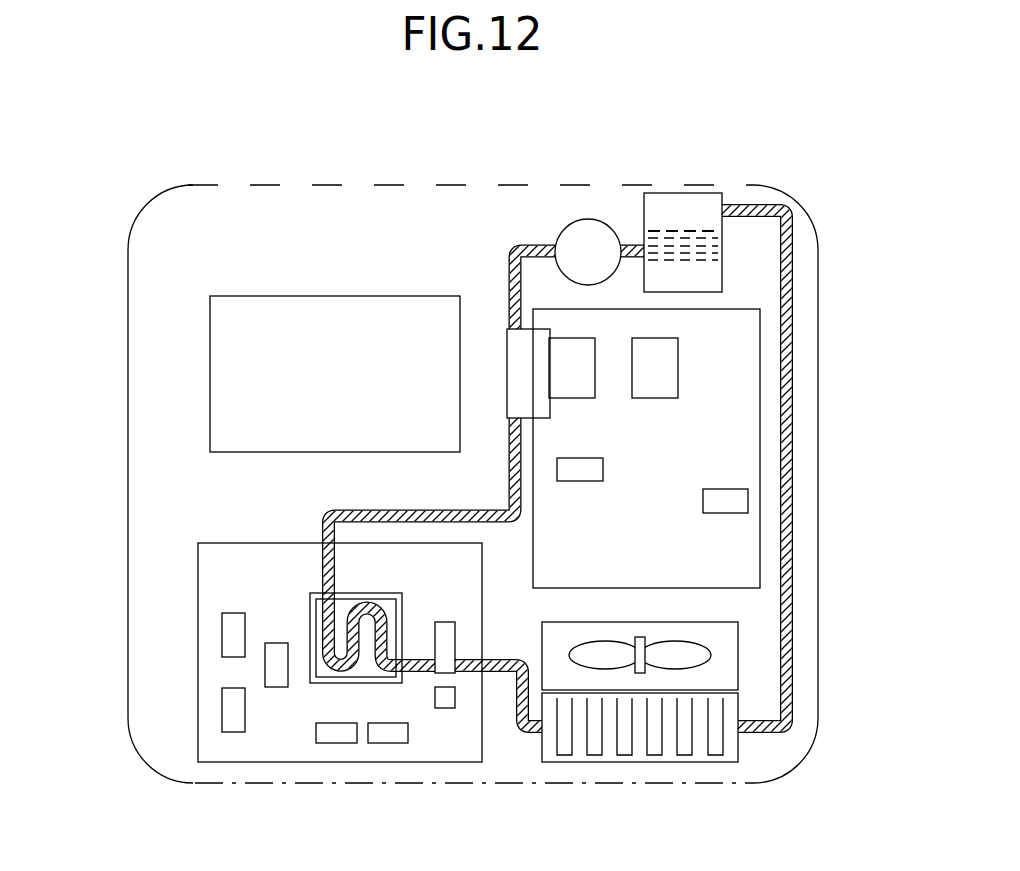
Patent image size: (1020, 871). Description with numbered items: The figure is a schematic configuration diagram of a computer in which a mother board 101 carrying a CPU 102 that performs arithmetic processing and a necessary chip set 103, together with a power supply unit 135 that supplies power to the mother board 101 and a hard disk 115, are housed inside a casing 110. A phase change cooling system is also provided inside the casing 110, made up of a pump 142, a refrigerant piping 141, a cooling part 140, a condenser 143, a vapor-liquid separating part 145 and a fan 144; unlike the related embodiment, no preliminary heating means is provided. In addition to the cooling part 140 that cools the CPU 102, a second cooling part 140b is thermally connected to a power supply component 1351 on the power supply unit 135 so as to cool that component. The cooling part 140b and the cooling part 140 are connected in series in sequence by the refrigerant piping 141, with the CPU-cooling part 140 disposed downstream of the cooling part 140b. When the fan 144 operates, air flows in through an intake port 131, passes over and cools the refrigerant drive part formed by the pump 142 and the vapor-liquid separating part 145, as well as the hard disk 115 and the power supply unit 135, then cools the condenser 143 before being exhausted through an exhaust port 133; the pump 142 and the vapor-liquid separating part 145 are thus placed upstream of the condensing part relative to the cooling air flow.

The mother board 101 is at (198, 577).
The CPU 102 is at (310, 605).
The chip set 103 is at (222, 634).
The casing 110 is at (818, 480).
The hard disk 115 is at (336, 296).
The intake port 131 is at (448, 185).
The exhaust port 133 is at (603, 783).
The power supply unit 135 is at (760, 412).
The power supply component 1351 is at (572, 401).
The cooling part 140 is at (317, 686).
The cooling part 140b is at (507, 345).
The refrigerant piping 141 is at (793, 572).
The pump 142 is at (592, 218).
The condenser 143 is at (697, 762).
The fan 144 is at (738, 651).
The vapor-liquid separating part 145 is at (683, 193).